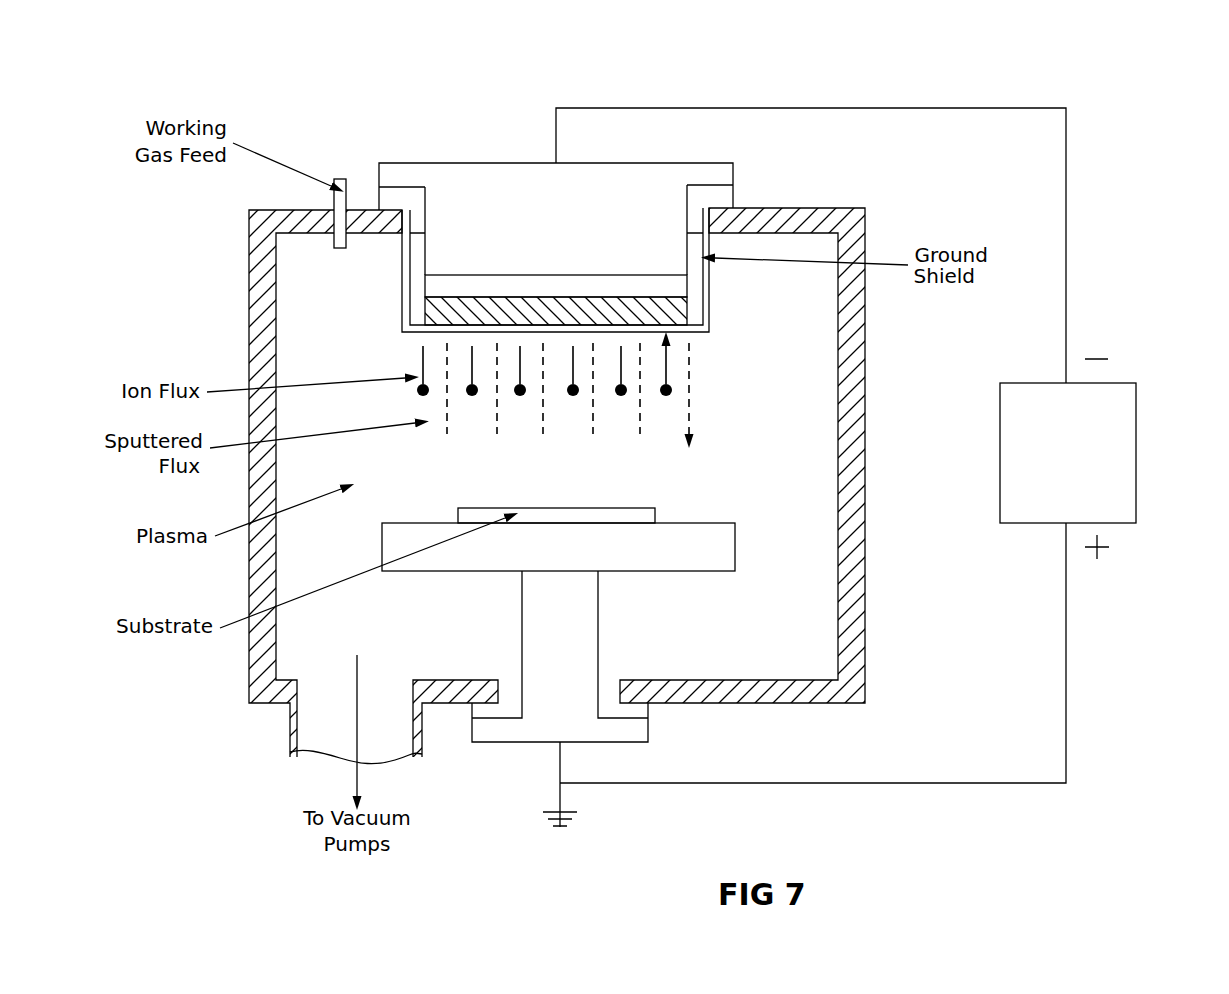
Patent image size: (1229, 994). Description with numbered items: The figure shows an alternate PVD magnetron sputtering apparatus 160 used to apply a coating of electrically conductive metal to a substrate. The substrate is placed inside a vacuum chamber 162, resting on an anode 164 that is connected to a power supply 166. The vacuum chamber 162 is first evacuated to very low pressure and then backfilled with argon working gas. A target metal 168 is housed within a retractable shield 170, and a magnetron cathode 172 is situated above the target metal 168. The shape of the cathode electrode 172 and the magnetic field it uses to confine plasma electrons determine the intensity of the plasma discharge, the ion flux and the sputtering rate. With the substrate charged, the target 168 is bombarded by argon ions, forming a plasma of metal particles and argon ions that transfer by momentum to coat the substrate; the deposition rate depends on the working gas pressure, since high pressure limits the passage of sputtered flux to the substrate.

The PVD magnetron sputtering apparatus 160 is at (1100, 80).
The vacuum chamber 162 is at (855, 687).
The anode 164 is at (715, 543).
The power supply 166 is at (1130, 412).
The target metal 168 is at (432, 308).
The retractable shield 170 is at (673, 283).
The magnetron cathode 172 is at (410, 168).